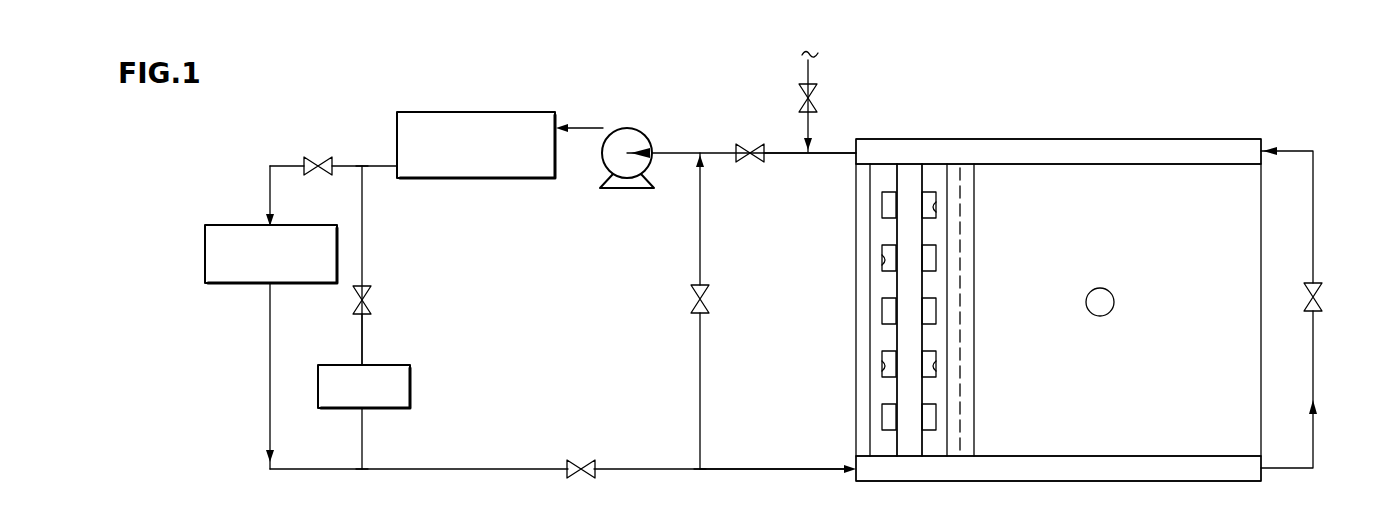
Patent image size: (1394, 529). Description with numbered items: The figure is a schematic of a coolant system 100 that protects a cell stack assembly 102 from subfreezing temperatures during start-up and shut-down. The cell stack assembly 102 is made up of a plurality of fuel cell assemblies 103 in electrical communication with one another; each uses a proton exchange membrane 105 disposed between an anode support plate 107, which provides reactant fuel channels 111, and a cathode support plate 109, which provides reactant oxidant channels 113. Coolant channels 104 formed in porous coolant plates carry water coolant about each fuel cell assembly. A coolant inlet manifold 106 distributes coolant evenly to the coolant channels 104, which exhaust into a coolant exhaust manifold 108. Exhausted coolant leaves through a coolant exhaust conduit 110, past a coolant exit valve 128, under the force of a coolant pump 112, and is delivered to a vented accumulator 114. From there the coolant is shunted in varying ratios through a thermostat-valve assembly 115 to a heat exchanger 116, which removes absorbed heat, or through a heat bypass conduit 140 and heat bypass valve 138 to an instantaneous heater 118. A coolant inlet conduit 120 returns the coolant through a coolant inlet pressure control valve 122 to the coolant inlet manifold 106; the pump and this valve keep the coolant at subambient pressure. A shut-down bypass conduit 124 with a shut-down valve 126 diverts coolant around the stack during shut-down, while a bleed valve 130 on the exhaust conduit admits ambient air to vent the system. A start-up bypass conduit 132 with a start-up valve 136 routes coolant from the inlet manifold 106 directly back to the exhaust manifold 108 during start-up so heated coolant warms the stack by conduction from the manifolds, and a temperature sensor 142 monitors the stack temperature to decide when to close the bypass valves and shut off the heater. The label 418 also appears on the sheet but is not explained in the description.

The coolant system 100 is at (699, 290).
The cell stack assembly 102 is at (1116, 205).
The fuel cell assemblies 103 is at (914, 156).
The coolant channels 104 is at (966, 156).
The proton exchange membrane 105 is at (908, 443).
The coolant inlet manifold 106 is at (1090, 476).
The anode support plate 107 is at (885, 448).
The coolant exhaust manifold 108 is at (1095, 161).
The cathode support plate 109 is at (935, 447).
The coolant exhaust conduit 110 is at (828, 151).
The reactant fuel channels 111 is at (885, 262).
The coolant pump 112 is at (628, 133).
The reactant oxidant channels 113 is at (934, 212).
The vented accumulator 114 is at (480, 112).
The thermostat-valve assembly 115 is at (317, 157).
The heat exchanger 116 is at (243, 224).
The instantaneous heater 118 is at (412, 385).
The coolant inlet conduit 120 is at (803, 473).
The coolant inlet pressure control valve 122 is at (585, 462).
The shut-down bypass conduit 124 is at (702, 425).
The shut-down valve 126 is at (707, 302).
The coolant exit valve 128 is at (752, 160).
The bleed valve 130 is at (815, 100).
The start-up bypass conduit 132 is at (1317, 377).
The start-up valve 136 is at (1320, 297).
The heat bypass valve 138 is at (367, 300).
The heat bypass conduit 140 is at (363, 343).
The temperature sensor 142 is at (1102, 302).
The controller line 418 is at (460, 528).